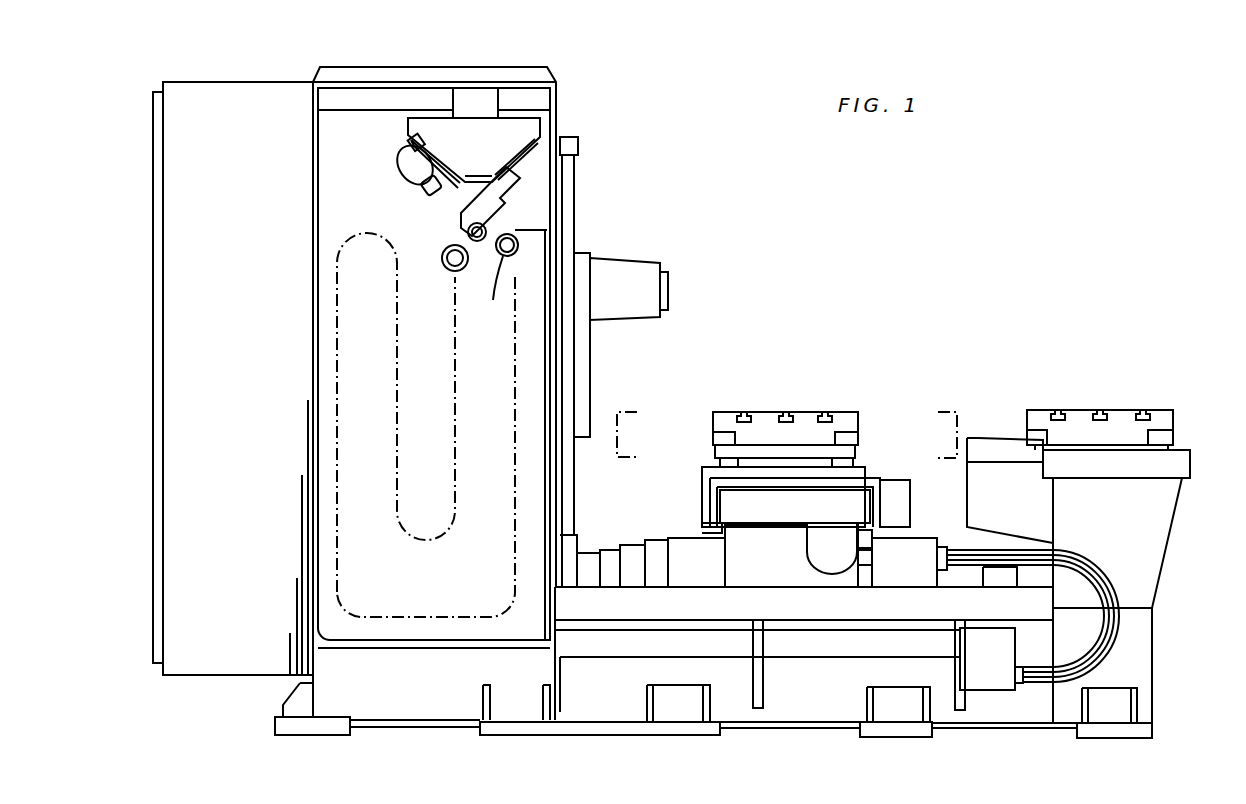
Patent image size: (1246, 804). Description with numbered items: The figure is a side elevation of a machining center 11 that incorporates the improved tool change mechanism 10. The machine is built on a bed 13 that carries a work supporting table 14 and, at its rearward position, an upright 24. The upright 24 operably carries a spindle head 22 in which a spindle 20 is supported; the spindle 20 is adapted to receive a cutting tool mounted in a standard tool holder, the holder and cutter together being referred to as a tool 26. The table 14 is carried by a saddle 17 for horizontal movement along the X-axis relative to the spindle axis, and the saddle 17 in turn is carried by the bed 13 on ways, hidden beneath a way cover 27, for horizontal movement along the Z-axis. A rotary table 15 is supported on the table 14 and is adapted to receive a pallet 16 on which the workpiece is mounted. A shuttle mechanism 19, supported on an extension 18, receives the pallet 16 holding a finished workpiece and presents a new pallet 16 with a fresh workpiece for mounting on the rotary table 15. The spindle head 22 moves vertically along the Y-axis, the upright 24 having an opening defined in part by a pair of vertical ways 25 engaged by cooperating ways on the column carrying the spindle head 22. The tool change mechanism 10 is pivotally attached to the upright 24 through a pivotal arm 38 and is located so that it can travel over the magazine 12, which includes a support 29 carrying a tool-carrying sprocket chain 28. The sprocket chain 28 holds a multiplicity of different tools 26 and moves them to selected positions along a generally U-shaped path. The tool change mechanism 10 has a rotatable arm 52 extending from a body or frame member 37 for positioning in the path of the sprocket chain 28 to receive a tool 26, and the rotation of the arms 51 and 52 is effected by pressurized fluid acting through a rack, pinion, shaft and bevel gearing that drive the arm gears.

The tool change mechanism 10 is at (522, 129).
The machining center 11 is at (590, 398).
The magazine 12 is at (306, 241).
The bed 13 is at (812, 695).
The work supporting table 14 is at (900, 498).
The rotary table 15 is at (855, 450).
The pallet 16 is at (812, 414).
The saddle 17 is at (760, 570).
The extension 18 is at (1143, 653).
The shuttle mechanism 19 is at (1160, 514).
The spindle 20 is at (670, 276).
The spindle head 22 is at (632, 316).
The upright 24 is at (545, 128).
The vertical ways 25 is at (580, 182).
The tool 26 is at (412, 180).
The way cover 27 is at (643, 548).
The sprocket chain 28 is at (337, 368).
The support 29 is at (325, 423).
The body or frame member 37 is at (434, 128).
The pivotal arm 38 is at (483, 90).
The arm 51 is at (400, 150).
The rotatable arm 52 is at (497, 197).